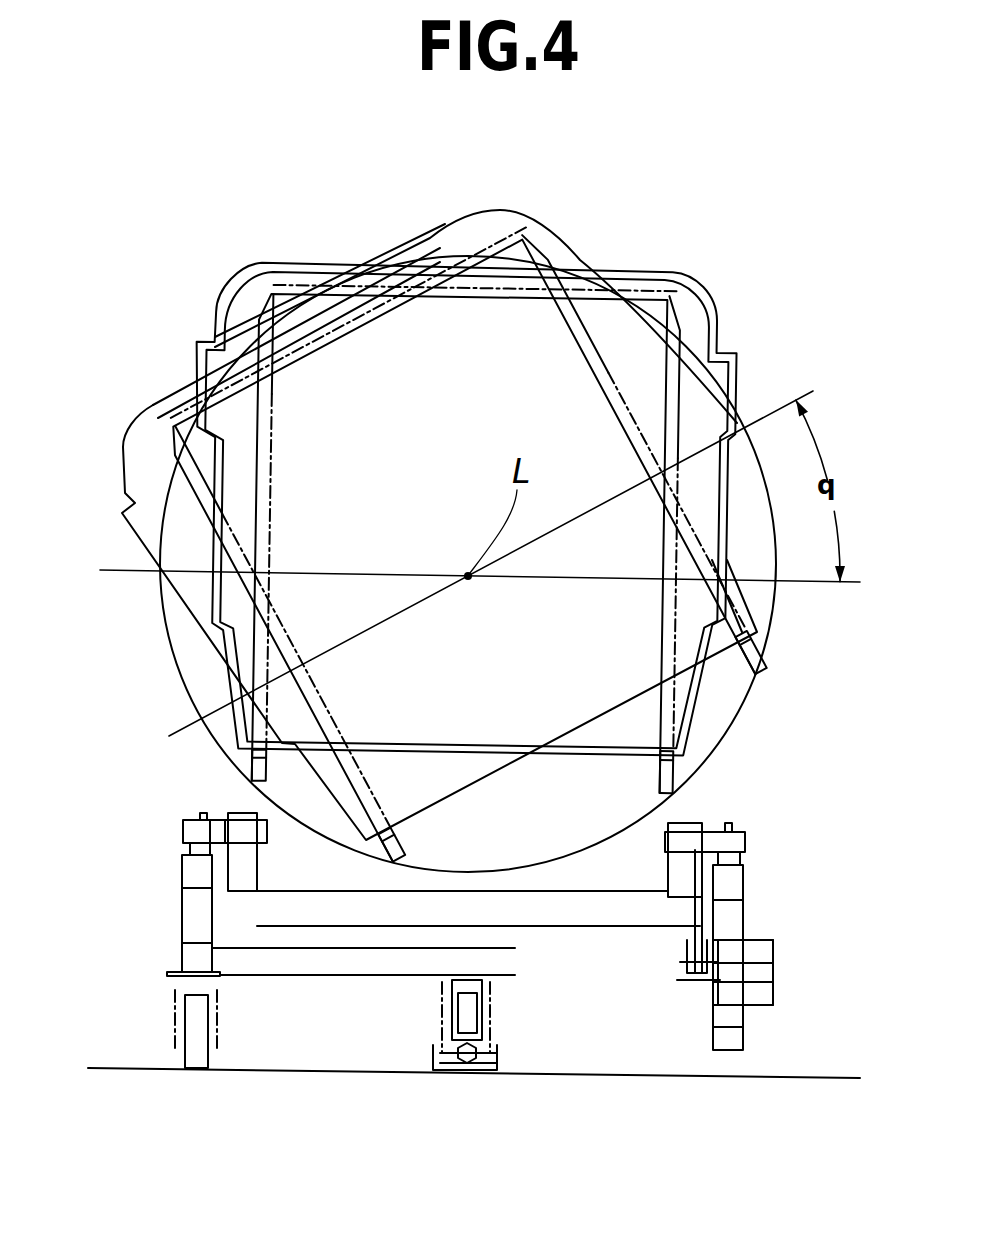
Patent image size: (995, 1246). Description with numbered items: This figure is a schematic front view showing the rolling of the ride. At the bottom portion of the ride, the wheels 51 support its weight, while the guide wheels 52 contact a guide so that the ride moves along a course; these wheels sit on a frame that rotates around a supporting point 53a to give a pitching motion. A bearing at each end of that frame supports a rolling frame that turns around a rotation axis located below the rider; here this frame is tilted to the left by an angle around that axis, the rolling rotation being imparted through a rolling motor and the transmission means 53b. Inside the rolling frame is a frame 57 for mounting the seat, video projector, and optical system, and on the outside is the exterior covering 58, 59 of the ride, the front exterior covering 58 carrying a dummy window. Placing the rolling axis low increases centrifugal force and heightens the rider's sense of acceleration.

The wheels 51 is at (202, 1047).
The guide wheels 52 is at (495, 1053).
The supporting point 53a is at (217, 822).
The transmission means 53b is at (743, 910).
The frame 57 is at (272, 513).
The front exterior covering 58 is at (703, 313).
The exterior covering 59 is at (477, 516).